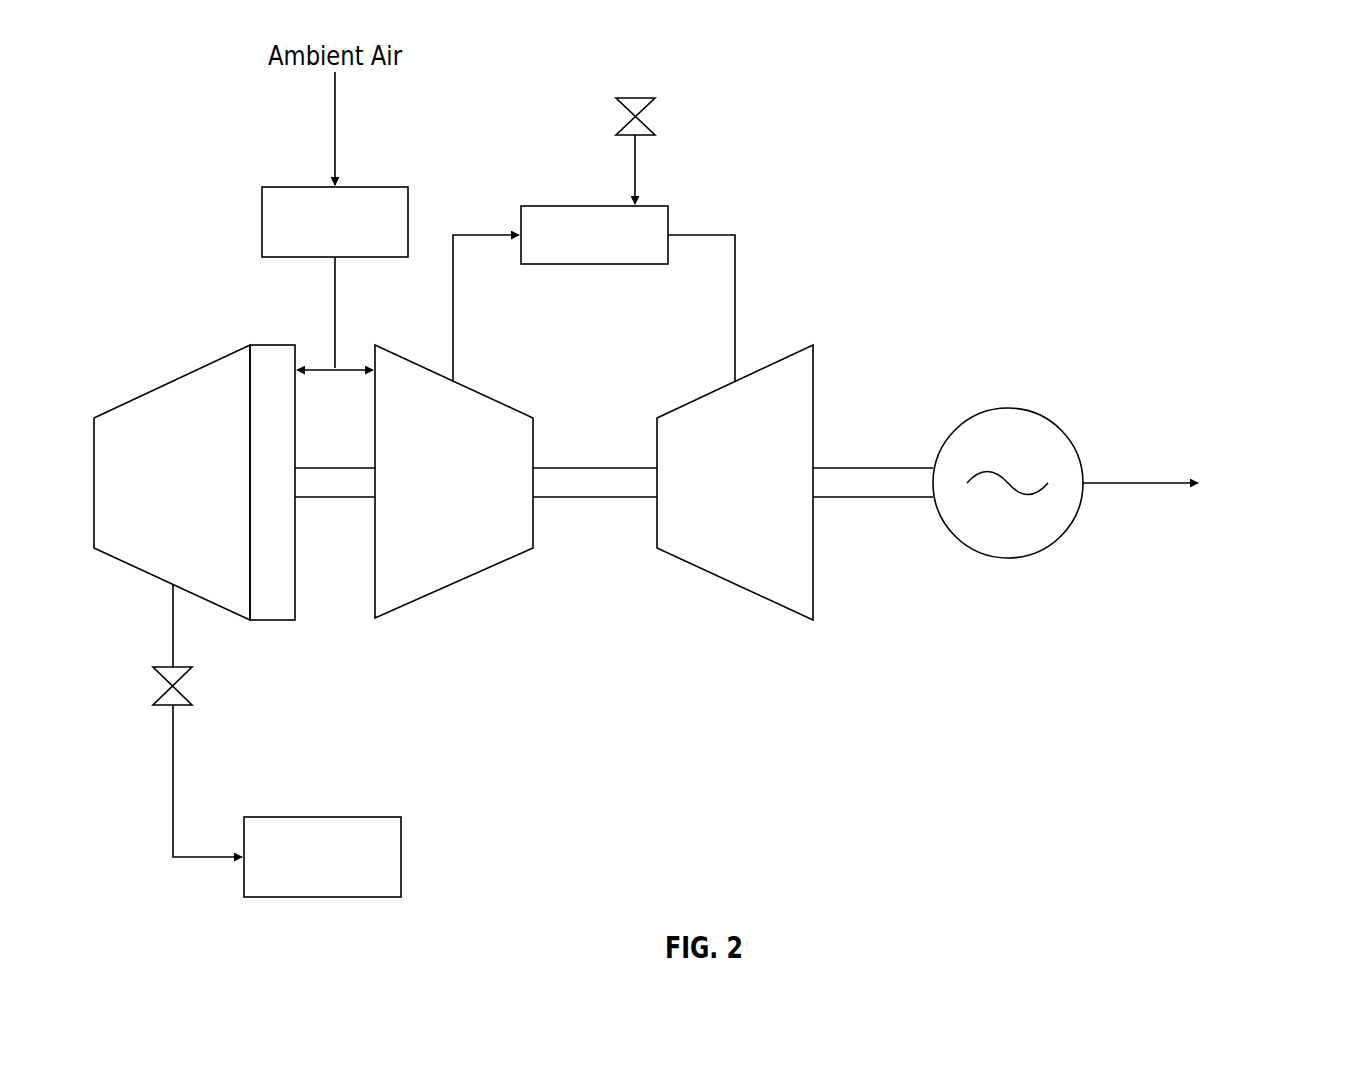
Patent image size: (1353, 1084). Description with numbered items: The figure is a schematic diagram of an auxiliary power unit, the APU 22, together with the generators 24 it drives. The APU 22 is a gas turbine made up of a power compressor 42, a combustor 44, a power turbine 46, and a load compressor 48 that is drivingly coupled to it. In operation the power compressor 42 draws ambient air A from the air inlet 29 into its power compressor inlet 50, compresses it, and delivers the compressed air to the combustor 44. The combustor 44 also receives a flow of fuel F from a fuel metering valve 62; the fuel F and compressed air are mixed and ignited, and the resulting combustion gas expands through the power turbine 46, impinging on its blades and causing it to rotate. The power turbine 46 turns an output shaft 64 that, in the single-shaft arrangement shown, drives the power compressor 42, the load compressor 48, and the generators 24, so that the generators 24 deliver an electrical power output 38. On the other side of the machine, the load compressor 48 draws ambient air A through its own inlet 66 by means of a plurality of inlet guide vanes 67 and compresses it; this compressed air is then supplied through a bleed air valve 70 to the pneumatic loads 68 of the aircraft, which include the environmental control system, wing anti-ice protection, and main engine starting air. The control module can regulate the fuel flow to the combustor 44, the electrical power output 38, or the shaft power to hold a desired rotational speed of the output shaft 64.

The APU 22 is at (450, 616).
The generators 24 is at (1055, 420).
The air inlet 29 is at (288, 186).
The electrical power output 38 is at (1140, 482).
The power compressor 42 is at (493, 398).
The combustor 44 is at (578, 206).
The power turbine 46 is at (697, 403).
The load compressor 48 is at (172, 383).
The power compressor inlet 50 is at (374, 413).
The fuel metering valve 62 is at (647, 122).
The output shaft 64 is at (612, 467).
The inlet 66 is at (297, 587).
The inlet guide vanes 67 is at (262, 343).
The pneumatic loads 68 is at (325, 817).
The bleed air valve 70 is at (182, 693).
The ambient air A is at (336, 136).
The fuel F is at (638, 168).